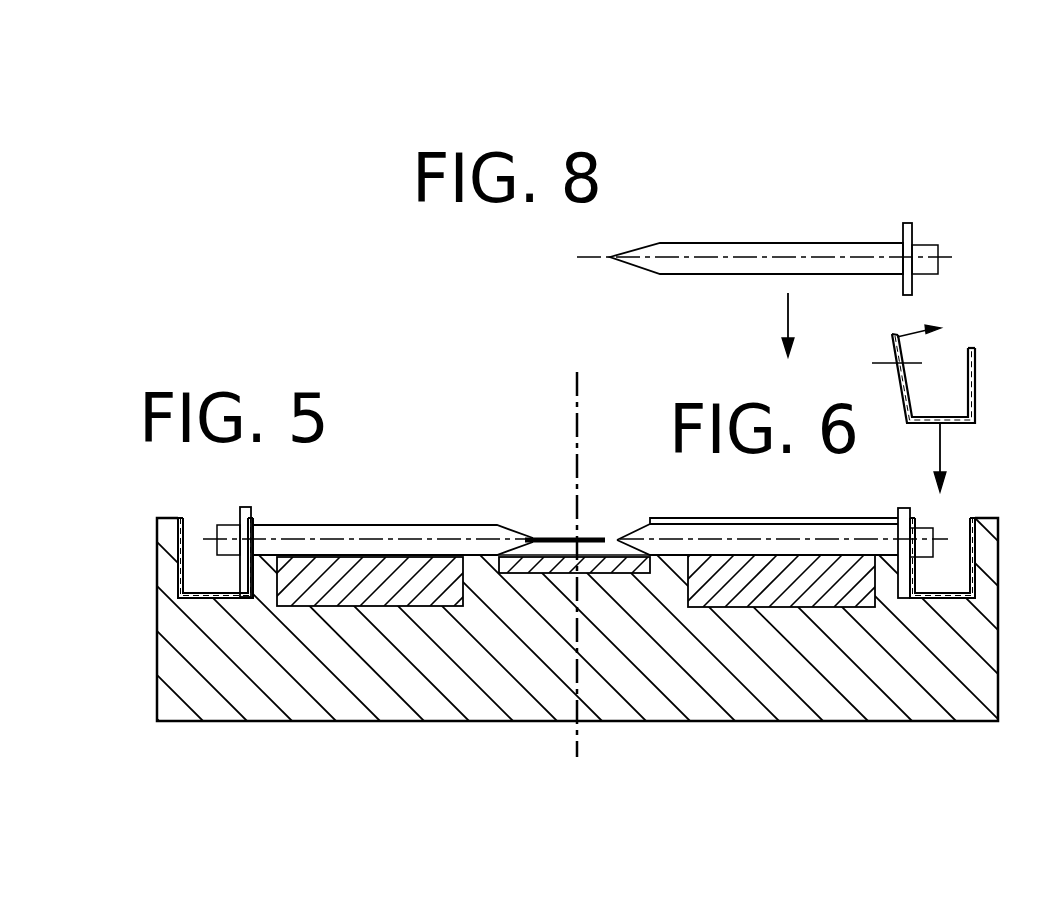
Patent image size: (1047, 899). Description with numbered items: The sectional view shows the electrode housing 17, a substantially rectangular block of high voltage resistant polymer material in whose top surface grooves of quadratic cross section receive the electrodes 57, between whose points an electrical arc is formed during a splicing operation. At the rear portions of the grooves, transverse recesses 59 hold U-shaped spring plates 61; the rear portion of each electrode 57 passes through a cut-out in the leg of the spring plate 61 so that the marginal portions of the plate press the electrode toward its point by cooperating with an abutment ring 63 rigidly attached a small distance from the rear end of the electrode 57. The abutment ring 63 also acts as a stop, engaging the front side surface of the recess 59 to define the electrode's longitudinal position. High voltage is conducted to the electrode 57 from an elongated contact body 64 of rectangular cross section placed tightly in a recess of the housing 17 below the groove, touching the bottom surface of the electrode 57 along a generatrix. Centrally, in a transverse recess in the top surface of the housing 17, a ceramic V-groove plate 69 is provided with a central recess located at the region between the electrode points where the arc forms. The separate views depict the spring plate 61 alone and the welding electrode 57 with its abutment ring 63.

In FIG. 5, the electrode housing 17 is at (168, 667).
In FIG. 8, the electrode 57 is at (765, 168).
In FIG. 5, the electrode 57 is at (417, 528).
In FIG. 5, the transverse recess 59 is at (200, 532).
In FIG. 6, the spring plate 61 is at (975, 366).
In FIG. 5, the spring plate 61 is at (178, 567).
In FIG. 8, the abutment ring 63 is at (956, 168).
In FIG. 5, the abutment ring 63 is at (248, 512).
In FIG. 5, the contact body 64 is at (495, 688).
In FIG. 5, the ceramic V-groove plate 69 is at (589, 552).